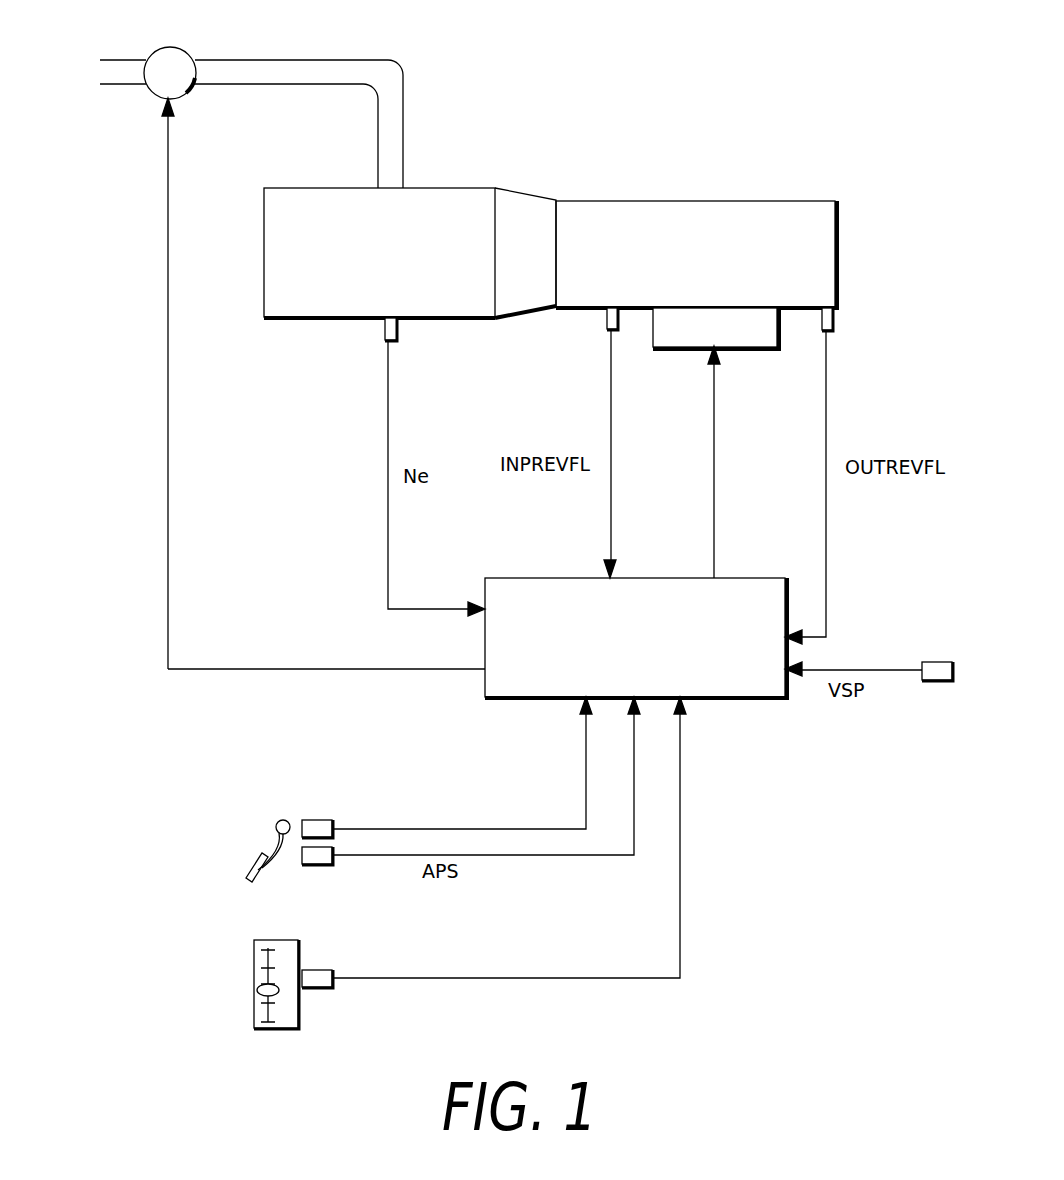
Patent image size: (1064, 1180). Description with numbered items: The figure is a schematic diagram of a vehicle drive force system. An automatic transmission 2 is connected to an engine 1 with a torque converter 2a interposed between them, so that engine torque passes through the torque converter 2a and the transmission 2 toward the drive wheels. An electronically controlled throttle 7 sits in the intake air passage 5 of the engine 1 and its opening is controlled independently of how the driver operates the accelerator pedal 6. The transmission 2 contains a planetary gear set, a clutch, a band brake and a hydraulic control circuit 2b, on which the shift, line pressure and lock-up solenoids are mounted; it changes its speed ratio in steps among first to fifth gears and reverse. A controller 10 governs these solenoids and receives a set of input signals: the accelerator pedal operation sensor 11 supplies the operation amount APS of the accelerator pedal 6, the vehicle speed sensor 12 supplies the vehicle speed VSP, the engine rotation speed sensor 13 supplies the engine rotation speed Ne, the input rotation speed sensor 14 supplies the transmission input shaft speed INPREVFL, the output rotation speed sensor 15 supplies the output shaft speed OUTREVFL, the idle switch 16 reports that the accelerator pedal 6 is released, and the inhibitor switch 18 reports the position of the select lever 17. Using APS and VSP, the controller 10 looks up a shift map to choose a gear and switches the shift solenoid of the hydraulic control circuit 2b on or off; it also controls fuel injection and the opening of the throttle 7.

The engine 1 is at (458, 172).
The automatic transmission 2 is at (798, 178).
The torque converter 2a is at (528, 196).
The hydraulic control circuit 2b is at (752, 347).
The intake air passage 5 is at (238, 60).
The accelerator pedal 6 is at (278, 822).
The electronically controlled throttle 7 is at (160, 100).
The controller 10 is at (516, 582).
The accelerator pedal operation sensor 11 is at (316, 856).
The vehicle speed sensor 12 is at (934, 670).
The engine rotation speed sensor 13 is at (398, 328).
The input rotation speed sensor 14 is at (606, 316).
The output rotation speed sensor 15 is at (836, 318).
The idle switch 16 is at (316, 828).
The select lever 17 is at (266, 992).
The inhibitor switch 18 is at (316, 980).